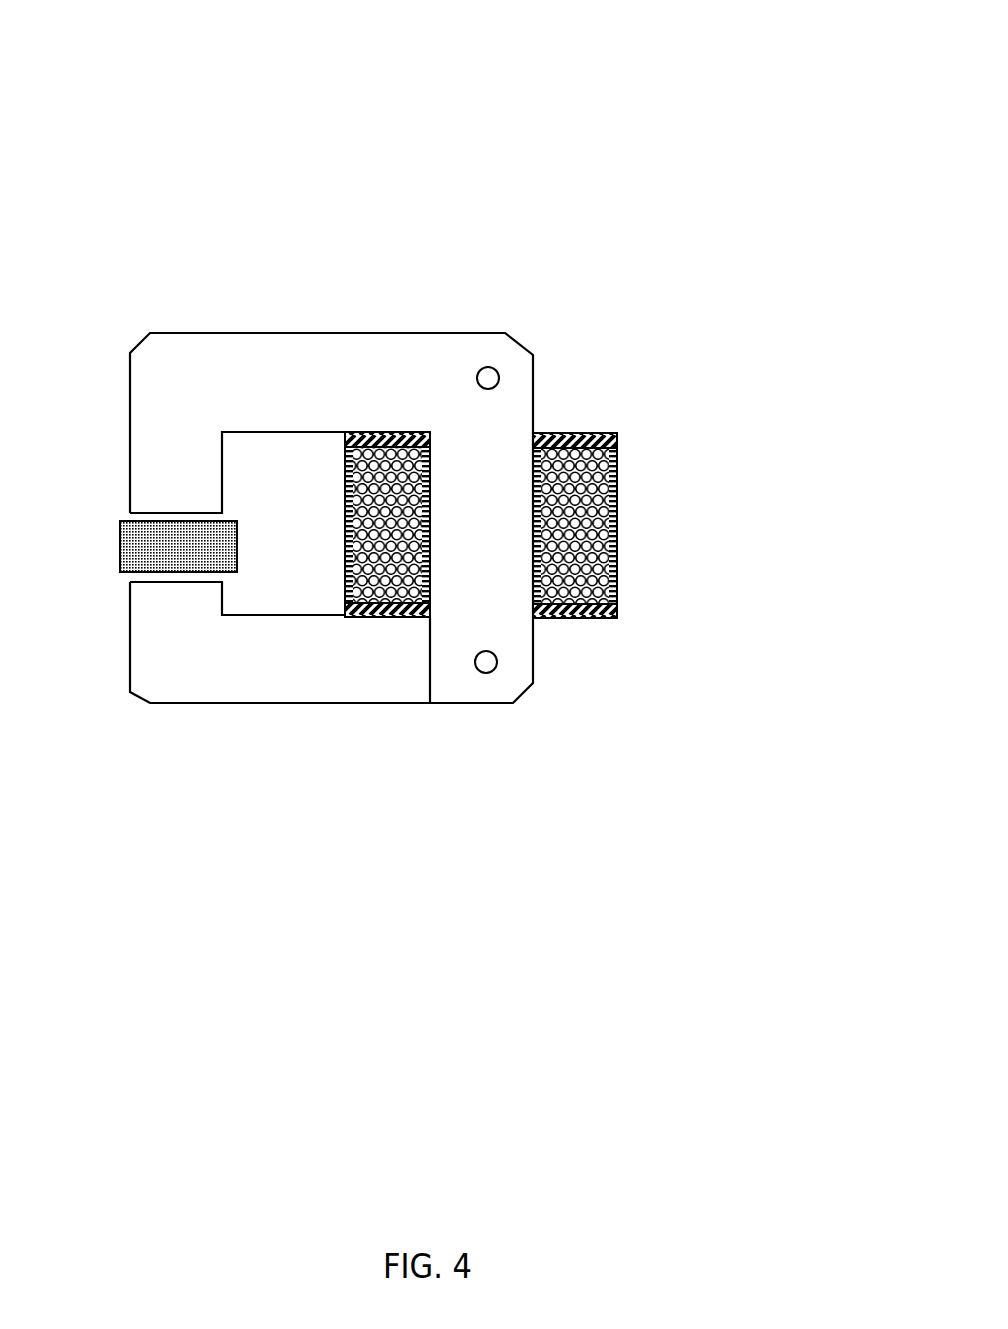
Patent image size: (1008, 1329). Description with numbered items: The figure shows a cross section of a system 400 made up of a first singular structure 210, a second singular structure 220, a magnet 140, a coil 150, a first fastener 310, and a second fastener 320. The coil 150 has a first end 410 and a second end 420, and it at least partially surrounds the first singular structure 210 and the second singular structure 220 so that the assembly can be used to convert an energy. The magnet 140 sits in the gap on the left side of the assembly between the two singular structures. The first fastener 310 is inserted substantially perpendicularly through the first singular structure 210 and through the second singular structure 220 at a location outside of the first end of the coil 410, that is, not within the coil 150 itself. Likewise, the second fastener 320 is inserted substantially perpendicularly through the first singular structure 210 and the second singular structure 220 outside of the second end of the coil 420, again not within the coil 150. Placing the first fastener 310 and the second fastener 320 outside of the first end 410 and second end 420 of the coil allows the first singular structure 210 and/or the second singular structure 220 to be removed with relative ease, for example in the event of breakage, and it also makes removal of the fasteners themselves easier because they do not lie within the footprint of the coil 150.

The system 400 is at (550, 62).
The first singular structure 210 is at (252, 392).
The second singular structure 220 is at (305, 655).
The magnet 140 is at (127, 543).
The first fastener 310 is at (488, 373).
The second fastener 320 is at (492, 668).
The coil 150 is at (601, 558).
The first end of coil 410 is at (617, 436).
The second end of coil 420 is at (705, 633).